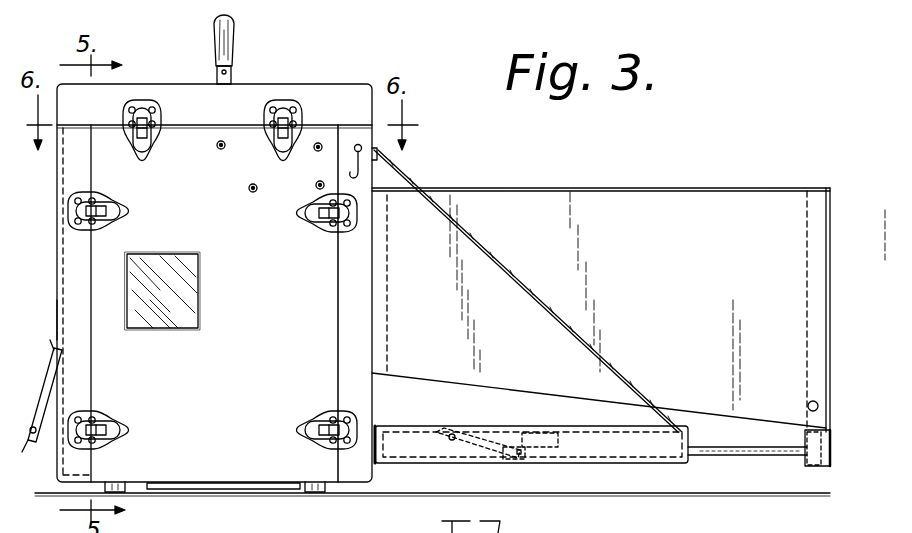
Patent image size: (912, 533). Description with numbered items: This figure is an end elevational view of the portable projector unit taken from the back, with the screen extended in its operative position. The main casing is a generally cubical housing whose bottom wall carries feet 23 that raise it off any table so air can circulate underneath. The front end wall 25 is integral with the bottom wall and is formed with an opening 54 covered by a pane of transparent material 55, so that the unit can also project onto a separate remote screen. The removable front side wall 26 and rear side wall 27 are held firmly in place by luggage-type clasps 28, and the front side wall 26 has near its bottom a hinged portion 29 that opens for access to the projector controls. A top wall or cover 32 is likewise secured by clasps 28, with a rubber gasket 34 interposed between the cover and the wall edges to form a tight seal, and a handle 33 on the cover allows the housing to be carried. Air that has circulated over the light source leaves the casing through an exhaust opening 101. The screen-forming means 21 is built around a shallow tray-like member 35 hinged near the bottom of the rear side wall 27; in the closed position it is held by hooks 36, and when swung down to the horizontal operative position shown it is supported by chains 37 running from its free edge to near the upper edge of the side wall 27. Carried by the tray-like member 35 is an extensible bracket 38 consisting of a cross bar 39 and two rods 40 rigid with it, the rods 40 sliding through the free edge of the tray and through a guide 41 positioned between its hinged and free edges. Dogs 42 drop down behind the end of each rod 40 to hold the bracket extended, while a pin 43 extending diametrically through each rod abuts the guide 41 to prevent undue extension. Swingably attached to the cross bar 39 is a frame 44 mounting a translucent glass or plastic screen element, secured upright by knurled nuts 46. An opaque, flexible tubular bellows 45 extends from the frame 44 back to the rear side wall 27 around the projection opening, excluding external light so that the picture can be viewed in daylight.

The exhaust opening 101 is at (57, 182).
The screen-forming means 21 is at (748, 169).
The feet 23 is at (313, 494).
The front end wall 25 is at (238, 426).
The front side wall 26 is at (70, 310).
The rear side wall 27 is at (352, 394).
The luggage-type clasps 28 is at (113, 222).
The hinged portion 29 is at (52, 392).
The top wall or cover 32 is at (325, 88).
The handle 33 is at (237, 36).
The rubber gasket 34 is at (196, 127).
The tray-like member 35 is at (594, 462).
The hooks 36 is at (353, 162).
The chains 37 is at (400, 172).
The extensible bracket 38 is at (795, 462).
The cross bar 39 is at (822, 466).
The rods 40 is at (716, 456).
The guide 41 is at (551, 420).
The dogs 42 is at (477, 432).
The pin 43 is at (512, 462).
The frame 44 is at (834, 168).
The tubular bellows 45 is at (614, 195).
The knurled nuts 46 is at (810, 402).
The opening 54 is at (174, 330).
The pane of transparent material 55 is at (185, 296).